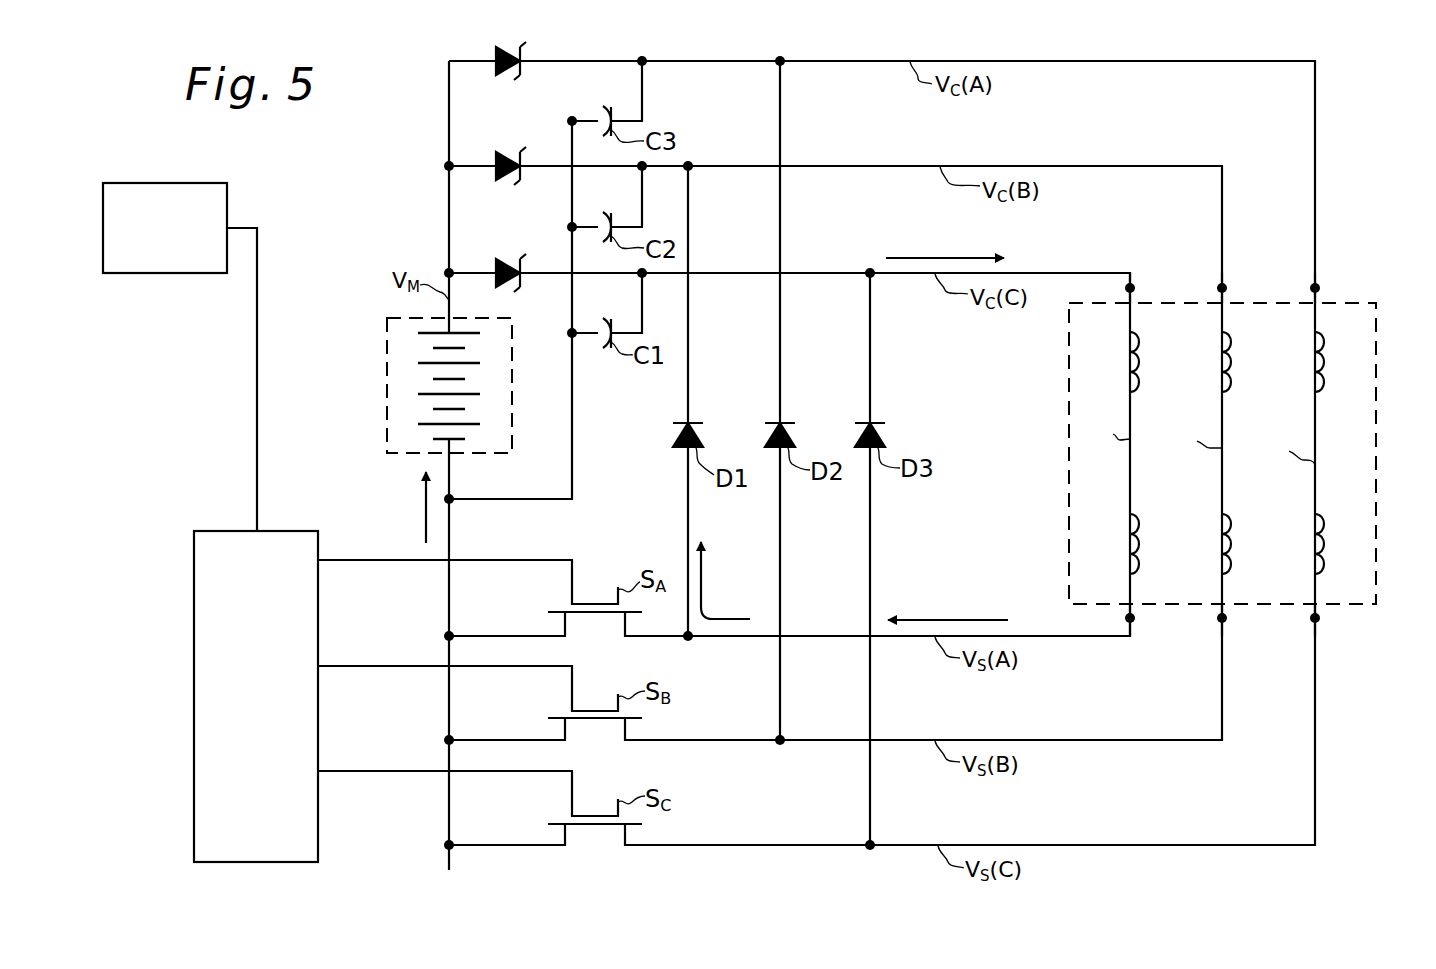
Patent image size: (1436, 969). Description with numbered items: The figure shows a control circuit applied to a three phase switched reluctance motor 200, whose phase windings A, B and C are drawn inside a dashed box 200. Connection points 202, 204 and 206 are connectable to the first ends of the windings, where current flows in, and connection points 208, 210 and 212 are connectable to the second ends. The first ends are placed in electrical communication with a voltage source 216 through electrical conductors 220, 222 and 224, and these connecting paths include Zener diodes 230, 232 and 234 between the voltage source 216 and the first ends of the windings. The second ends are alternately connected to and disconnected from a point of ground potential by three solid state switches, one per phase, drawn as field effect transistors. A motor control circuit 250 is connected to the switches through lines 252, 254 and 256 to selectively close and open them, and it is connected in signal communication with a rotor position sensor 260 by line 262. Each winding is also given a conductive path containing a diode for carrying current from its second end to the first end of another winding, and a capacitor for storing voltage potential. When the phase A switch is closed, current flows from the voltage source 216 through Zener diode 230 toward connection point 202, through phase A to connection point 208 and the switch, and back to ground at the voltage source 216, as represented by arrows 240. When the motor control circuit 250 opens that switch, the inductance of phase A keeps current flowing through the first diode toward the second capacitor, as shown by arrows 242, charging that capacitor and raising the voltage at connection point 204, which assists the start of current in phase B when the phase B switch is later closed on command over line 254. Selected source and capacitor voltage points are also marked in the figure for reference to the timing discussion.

The three phase switched reluctance motor 200 is at (1358, 604).
The connection point 202 is at (1134, 288).
The connection point 204 is at (1226, 288).
The connection point 206 is at (1319, 288).
The connection point 208 is at (1134, 620).
The connection point 210 is at (1226, 620).
The connection point 212 is at (1319, 620).
The voltage source 216 is at (387, 360).
The electrical conductor 220 is at (1044, 272).
The electrical conductor 222 is at (1100, 166).
The electrical conductor 224 is at (1172, 62).
The Zener diode 230 is at (518, 260).
The Zener diode 232 is at (505, 154).
The Zener diode 234 is at (510, 48).
The arrows 240 is at (424, 496).
The arrows 242 is at (704, 590).
The motor control circuit 250 is at (220, 531).
The line 252 is at (425, 562).
The line 254 is at (430, 668).
The line 256 is at (430, 773).
The rotor position sensor 260 is at (228, 193).
The line 262 is at (258, 305).